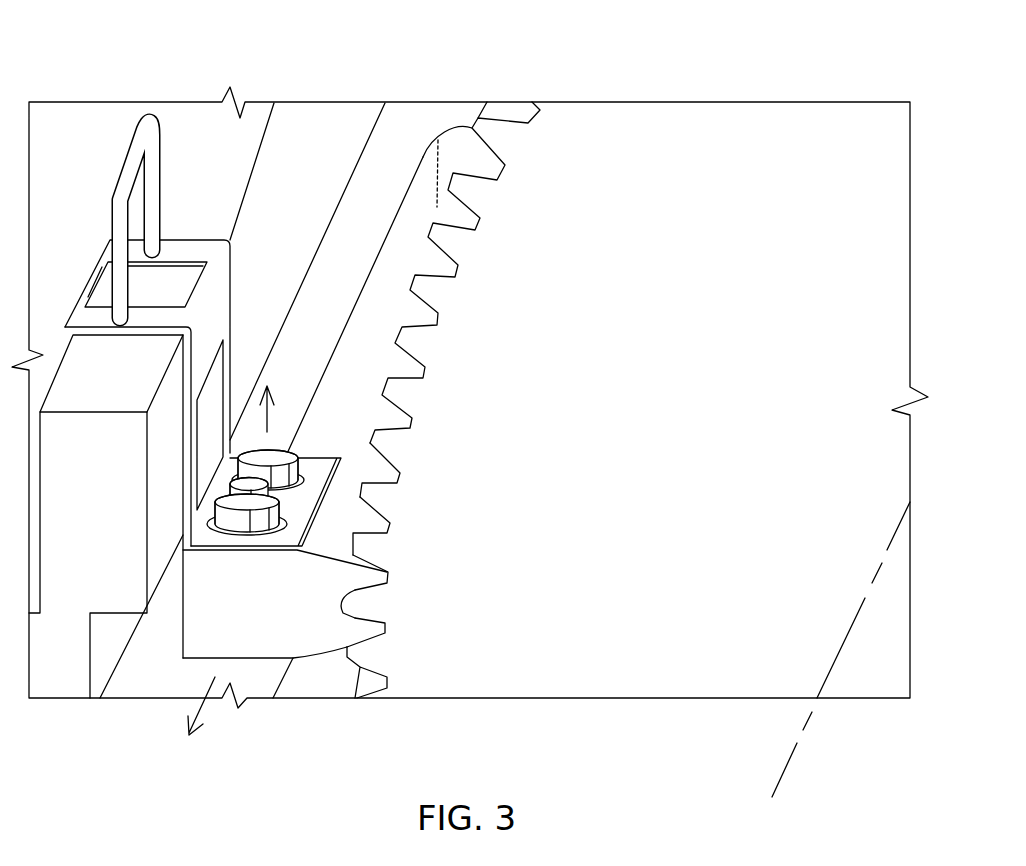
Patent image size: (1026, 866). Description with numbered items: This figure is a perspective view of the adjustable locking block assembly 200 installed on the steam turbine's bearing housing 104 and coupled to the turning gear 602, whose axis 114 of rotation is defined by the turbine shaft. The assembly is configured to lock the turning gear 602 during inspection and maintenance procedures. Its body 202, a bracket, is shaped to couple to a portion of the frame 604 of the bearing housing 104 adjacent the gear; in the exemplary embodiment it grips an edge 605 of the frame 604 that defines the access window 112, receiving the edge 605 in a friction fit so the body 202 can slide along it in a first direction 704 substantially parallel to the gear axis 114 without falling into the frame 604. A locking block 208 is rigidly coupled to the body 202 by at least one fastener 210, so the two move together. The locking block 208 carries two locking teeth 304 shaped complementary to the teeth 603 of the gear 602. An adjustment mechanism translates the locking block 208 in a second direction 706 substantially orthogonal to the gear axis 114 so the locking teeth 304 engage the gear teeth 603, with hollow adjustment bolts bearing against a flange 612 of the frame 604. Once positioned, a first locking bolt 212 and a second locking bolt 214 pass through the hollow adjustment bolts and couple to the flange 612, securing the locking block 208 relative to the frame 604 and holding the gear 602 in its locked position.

The bearing housing 104 is at (615, 69).
The turning gear 602 is at (730, 110).
The window 112 is at (230, 142).
The frame edge 605 is at (232, 183).
The gear axis 114 is at (853, 623).
The flange 612 is at (167, 683).
The locking block 208 is at (350, 476).
The fastener 210 is at (364, 490).
The second locking bolt 214 is at (352, 540).
The locking tooth 304 is at (372, 580).
The gear teeth 603 is at (369, 600).
The frame 604 is at (160, 350).
The adjustable locking block assembly 200 is at (234, 246).
The body 202 is at (168, 247).
The first locking bolt 212 is at (290, 452).
The second direction 706 is at (270, 420).
The first direction 704 is at (190, 718).